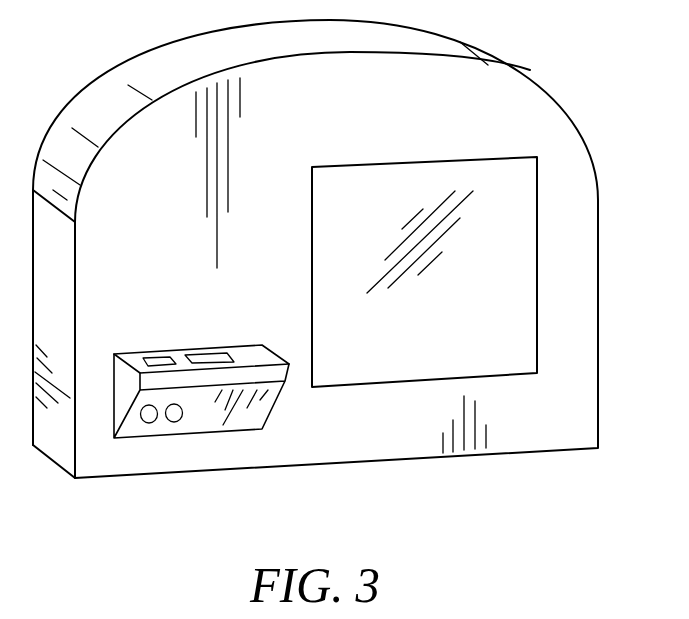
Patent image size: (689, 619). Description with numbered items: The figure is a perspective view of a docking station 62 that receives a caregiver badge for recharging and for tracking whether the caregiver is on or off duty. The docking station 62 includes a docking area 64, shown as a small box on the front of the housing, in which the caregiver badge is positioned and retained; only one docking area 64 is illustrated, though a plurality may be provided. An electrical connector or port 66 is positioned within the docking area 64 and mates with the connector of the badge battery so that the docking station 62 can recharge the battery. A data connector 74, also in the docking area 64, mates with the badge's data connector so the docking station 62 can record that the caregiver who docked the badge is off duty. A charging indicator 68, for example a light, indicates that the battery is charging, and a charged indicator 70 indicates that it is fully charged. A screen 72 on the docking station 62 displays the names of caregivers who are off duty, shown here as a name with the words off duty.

The docking station 62 is at (488, 90).
The docking area 64 is at (132, 357).
The electrical connector 66 is at (207, 356).
The charging indicator 68 is at (149, 423).
The charged indicator 70 is at (174, 422).
The screen 72 is at (515, 268).
The data connector 74 is at (160, 360).